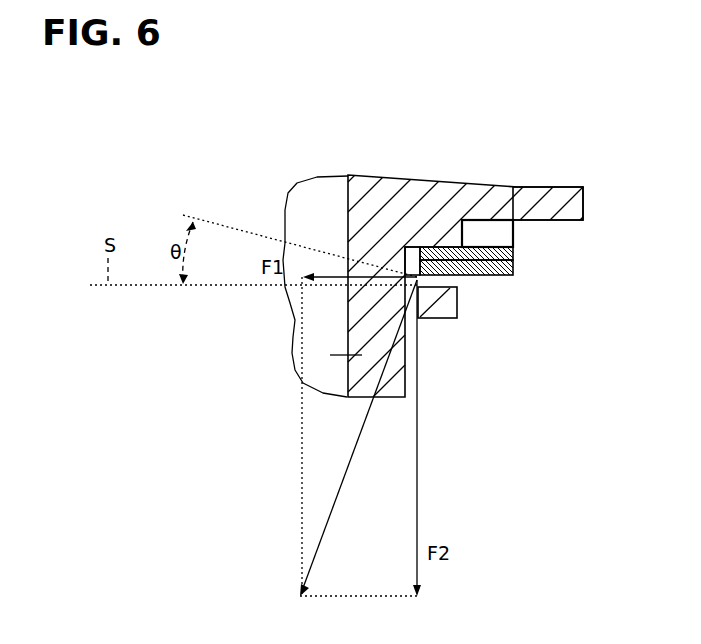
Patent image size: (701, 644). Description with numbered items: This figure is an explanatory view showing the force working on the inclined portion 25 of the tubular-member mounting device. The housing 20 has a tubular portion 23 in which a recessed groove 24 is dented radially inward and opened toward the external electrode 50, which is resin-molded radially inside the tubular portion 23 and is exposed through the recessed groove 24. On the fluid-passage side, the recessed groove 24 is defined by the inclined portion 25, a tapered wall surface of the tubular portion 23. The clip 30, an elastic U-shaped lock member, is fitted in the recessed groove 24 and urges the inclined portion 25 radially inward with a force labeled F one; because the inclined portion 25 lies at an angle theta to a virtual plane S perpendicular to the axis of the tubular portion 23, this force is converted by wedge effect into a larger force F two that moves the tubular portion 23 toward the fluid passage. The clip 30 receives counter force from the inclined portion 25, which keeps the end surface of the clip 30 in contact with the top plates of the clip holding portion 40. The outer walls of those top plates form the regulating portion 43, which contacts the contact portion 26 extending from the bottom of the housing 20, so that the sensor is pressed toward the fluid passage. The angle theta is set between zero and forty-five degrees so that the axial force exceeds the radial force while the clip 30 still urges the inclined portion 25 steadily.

The housing 20 is at (410, 188).
The tubular portion 23 is at (447, 307).
The recessed groove 24 is at (513, 257).
The inclined portion 25 is at (481, 273).
The contact portion 26 is at (574, 233).
The clip 30 is at (510, 268).
The clip holding portion 40 is at (531, 236).
The regulating portion 43 is at (560, 206).
The external electrode 50 is at (330, 355).